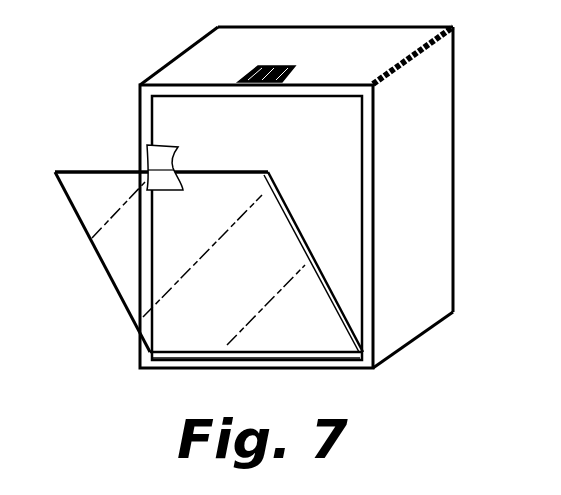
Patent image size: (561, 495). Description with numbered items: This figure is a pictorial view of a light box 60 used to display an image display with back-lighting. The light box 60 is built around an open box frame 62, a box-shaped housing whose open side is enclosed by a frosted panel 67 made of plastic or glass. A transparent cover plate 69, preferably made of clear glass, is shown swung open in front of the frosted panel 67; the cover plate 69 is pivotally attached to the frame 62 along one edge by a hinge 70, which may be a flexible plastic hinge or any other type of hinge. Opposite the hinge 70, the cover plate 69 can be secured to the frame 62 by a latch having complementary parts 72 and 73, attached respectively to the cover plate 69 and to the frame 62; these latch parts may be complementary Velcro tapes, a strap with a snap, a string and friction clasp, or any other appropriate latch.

The light box 60 is at (75, 293).
The open box frame 62 is at (413, 228).
The frosted panel 67 is at (325, 155).
The transparent cover plate 69 is at (233, 297).
The hinge 70 is at (178, 360).
The latch part 72 is at (157, 158).
The latch part 73 is at (256, 66).